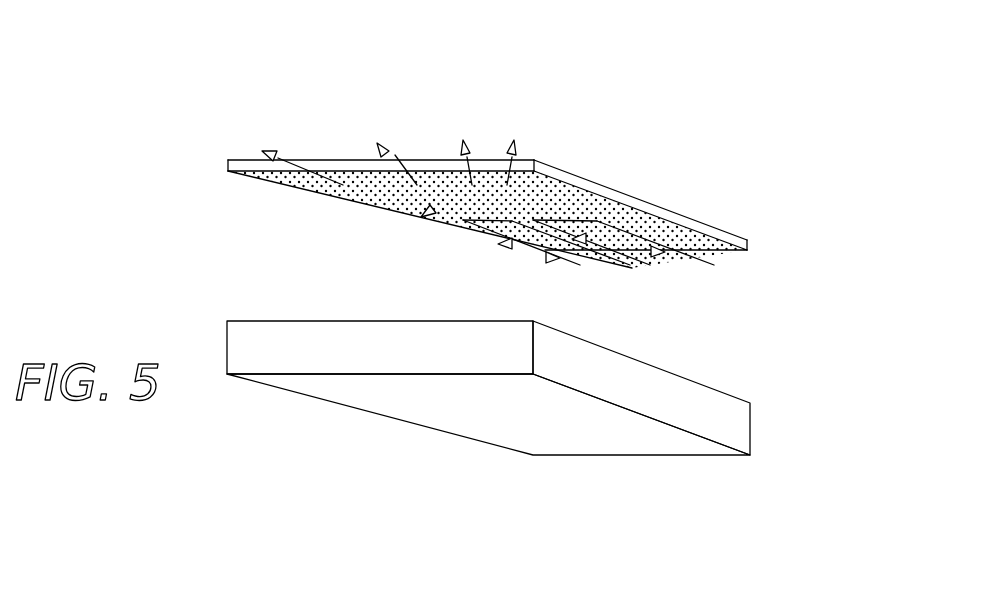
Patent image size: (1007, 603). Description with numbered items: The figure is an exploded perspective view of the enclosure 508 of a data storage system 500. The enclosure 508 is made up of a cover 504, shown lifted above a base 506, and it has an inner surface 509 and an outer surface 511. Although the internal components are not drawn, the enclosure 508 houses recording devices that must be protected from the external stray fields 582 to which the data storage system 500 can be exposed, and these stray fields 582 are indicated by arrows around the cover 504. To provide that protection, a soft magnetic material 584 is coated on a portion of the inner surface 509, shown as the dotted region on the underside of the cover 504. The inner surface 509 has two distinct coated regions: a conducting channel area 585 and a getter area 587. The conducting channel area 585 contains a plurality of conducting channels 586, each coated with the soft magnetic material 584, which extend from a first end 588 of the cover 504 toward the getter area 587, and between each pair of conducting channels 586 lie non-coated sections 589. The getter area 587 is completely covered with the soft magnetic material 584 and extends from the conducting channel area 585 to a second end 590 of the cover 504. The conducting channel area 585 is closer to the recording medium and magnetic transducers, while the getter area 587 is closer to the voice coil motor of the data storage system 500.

The data storage system 500 is at (543, 166).
The cover 504 is at (543, 197).
The base 506 is at (750, 437).
The enclosure 508 is at (567, 403).
The inner surface 509 is at (443, 222).
The outer surface 511 is at (435, 413).
The external stray fields 582 is at (395, 153).
The soft magnetic material 584 is at (581, 195).
The conducting channel area 585 is at (690, 220).
The conducting channels 586 is at (607, 236).
The getter area 587 is at (410, 217).
The first end 588 is at (630, 250).
The non-coated sections 589 is at (665, 248).
The second end 590 is at (350, 167).